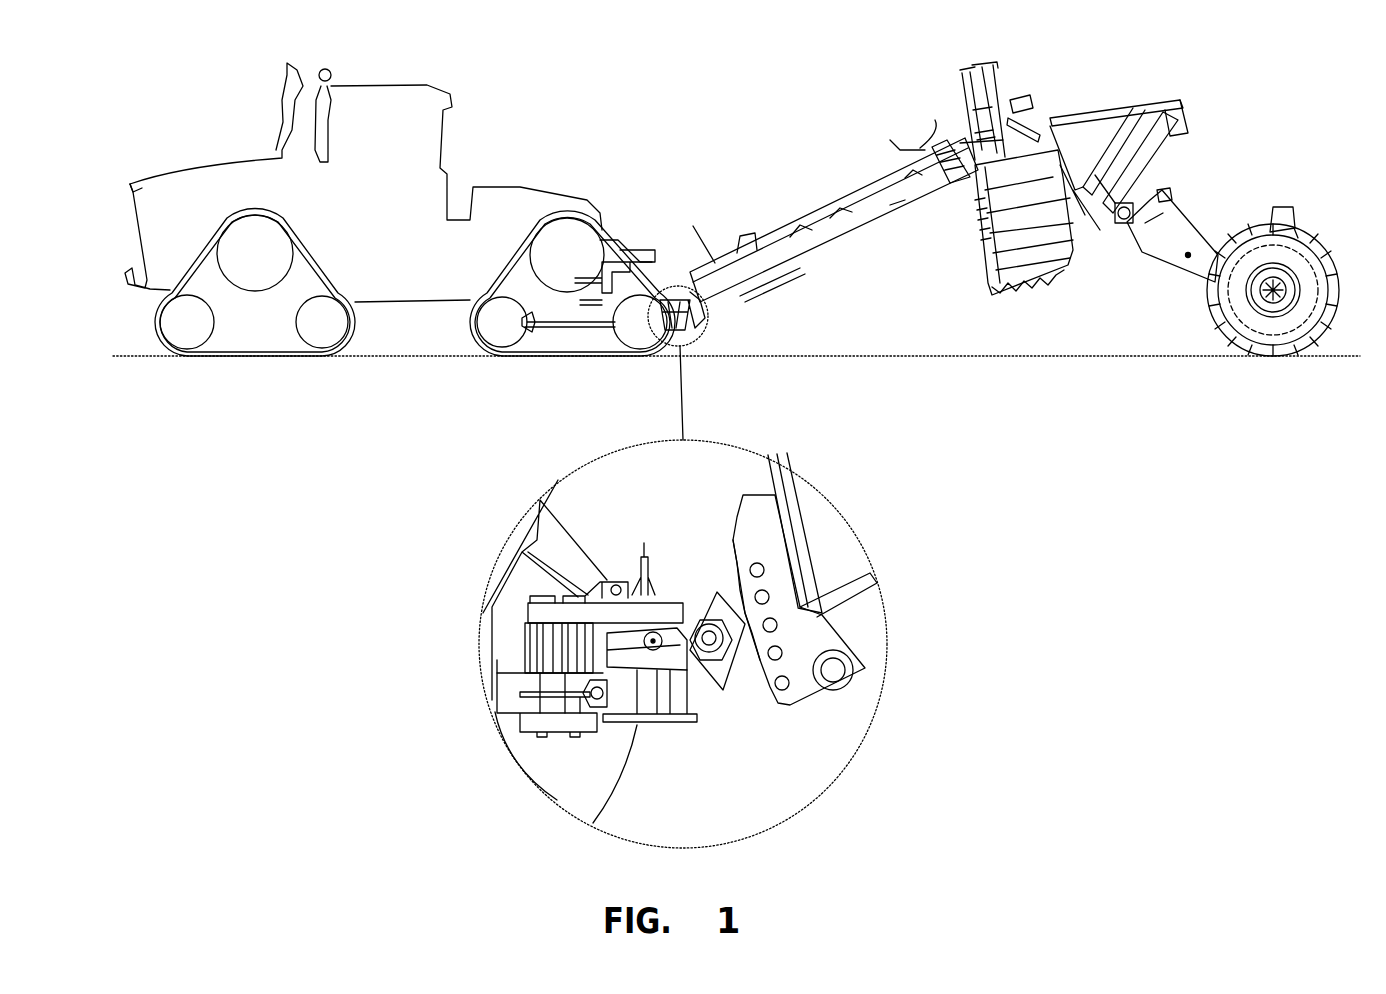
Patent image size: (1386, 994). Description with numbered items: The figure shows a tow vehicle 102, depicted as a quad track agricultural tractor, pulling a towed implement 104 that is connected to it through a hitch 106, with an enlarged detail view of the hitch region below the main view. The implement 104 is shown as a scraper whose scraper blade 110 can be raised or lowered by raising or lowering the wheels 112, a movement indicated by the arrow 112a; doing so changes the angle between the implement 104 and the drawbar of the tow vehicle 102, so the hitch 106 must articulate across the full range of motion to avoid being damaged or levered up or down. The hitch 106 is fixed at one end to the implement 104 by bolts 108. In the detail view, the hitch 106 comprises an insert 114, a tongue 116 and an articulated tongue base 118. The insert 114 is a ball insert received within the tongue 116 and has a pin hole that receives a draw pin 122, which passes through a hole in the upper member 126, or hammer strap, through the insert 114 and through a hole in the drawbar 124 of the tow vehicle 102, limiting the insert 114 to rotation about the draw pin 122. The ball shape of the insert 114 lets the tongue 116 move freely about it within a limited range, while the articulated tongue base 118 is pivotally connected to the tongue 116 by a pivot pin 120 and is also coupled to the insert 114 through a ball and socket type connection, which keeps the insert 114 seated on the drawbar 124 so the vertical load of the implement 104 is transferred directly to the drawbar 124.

The tow vehicle 102 is at (236, 155).
The towed implement 104 is at (1104, 90).
The hitch 106 is at (673, 272).
The bolts 108 is at (765, 600).
The scraper blade 110 is at (988, 277).
The wheels 112 is at (1292, 194).
The arrow 112a is at (1245, 205).
The insert 114 is at (647, 658).
The tongue 116 is at (617, 647).
The articulated tongue base 118 is at (750, 655).
The pivot pin 120 is at (708, 637).
The draw pin 122 is at (635, 597).
The drawbar 124 is at (512, 700).
The upper member 126 is at (537, 612).